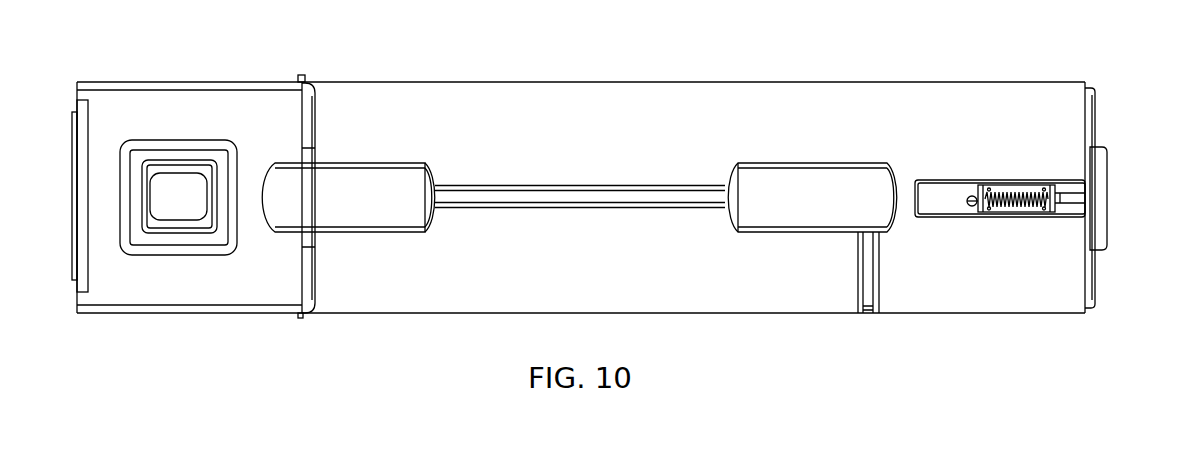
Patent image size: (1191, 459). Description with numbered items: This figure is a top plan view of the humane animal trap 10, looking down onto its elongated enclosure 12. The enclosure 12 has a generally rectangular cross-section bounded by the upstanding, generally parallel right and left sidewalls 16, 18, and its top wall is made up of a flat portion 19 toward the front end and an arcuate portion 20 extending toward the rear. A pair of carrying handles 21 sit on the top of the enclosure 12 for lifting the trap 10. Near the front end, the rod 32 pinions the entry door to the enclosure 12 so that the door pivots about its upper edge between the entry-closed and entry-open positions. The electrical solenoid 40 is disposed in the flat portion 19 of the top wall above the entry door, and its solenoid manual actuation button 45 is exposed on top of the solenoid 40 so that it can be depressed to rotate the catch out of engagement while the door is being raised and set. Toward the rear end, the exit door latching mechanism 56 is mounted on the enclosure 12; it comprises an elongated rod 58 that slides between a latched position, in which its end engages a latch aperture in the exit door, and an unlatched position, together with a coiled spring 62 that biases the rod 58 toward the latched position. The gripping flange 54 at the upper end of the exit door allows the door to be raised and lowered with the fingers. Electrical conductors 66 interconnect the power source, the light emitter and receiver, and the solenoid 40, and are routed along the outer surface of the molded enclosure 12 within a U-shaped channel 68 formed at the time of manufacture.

The animal trap 10 is at (646, 47).
The elongated enclosure 12 is at (226, 80).
The right sidewall 16 is at (403, 313).
The left sidewall 18 is at (403, 80).
The flat portion of top wall 19 is at (283, 290).
The arcuate portion of top wall 20 is at (616, 279).
The carrying handles 21 is at (368, 175).
The rod 32 is at (300, 318).
The electrical solenoid 40 is at (225, 141).
The solenoid manual actuation button 45 is at (178, 172).
The gripping flange 54 is at (1105, 172).
The latching mechanism 56 is at (1013, 188).
The elongated rod 58 is at (1072, 197).
The coiled spring 62 is at (1015, 205).
The electrical conductors 66 is at (698, 227).
The U-shaped channel 68 is at (580, 195).